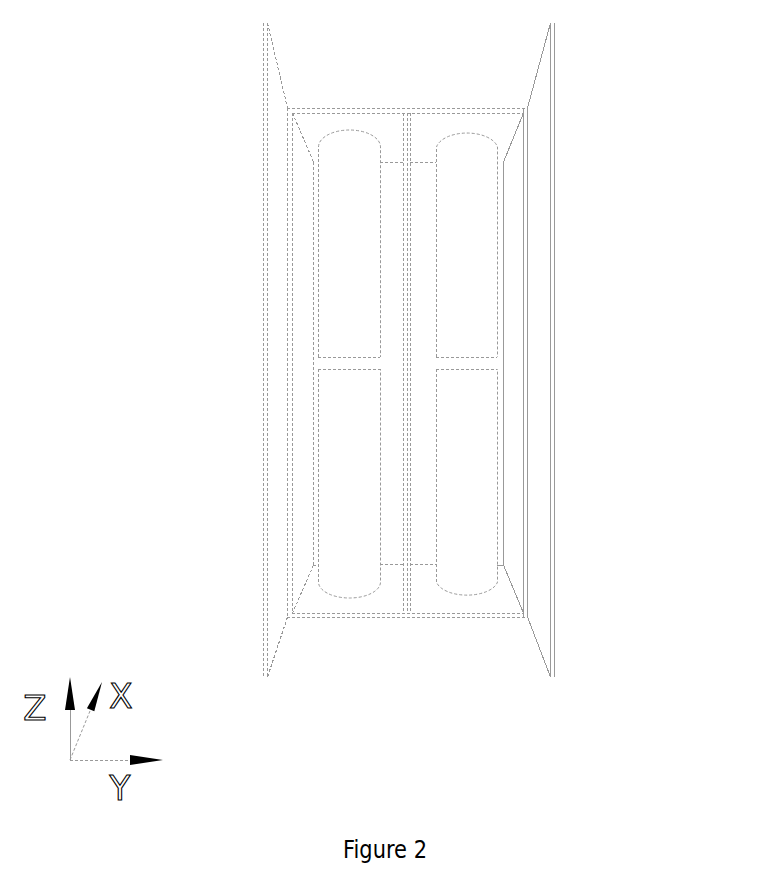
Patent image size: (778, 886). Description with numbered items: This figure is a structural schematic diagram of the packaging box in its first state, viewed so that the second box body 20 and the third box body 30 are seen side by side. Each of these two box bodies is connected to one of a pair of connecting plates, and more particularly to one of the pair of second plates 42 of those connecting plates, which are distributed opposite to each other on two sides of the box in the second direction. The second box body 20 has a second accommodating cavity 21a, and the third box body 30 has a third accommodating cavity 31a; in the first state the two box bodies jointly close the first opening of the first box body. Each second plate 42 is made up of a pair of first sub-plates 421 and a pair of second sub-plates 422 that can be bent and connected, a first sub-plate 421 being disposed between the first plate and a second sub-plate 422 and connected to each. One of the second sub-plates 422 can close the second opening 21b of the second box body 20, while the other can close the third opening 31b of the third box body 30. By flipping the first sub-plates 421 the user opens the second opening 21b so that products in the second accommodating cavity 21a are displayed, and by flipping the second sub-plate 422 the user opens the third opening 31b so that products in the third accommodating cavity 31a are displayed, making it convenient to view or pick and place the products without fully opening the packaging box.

The second box body 20 is at (218, 562).
The third box body 30 is at (605, 563).
The second accommodating cavity 21a is at (393, 152).
The third accommodating cavity 31a is at (428, 152).
The second opening 21b is at (378, 645).
The third opening 31b is at (442, 645).
The second plate 42 is at (404, 364).
The first sub-plate 421 is at (300, 290).
The second sub-plate 422 is at (409, 481).